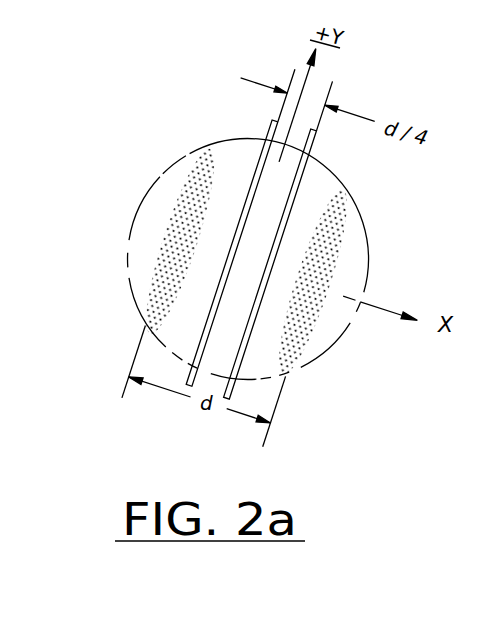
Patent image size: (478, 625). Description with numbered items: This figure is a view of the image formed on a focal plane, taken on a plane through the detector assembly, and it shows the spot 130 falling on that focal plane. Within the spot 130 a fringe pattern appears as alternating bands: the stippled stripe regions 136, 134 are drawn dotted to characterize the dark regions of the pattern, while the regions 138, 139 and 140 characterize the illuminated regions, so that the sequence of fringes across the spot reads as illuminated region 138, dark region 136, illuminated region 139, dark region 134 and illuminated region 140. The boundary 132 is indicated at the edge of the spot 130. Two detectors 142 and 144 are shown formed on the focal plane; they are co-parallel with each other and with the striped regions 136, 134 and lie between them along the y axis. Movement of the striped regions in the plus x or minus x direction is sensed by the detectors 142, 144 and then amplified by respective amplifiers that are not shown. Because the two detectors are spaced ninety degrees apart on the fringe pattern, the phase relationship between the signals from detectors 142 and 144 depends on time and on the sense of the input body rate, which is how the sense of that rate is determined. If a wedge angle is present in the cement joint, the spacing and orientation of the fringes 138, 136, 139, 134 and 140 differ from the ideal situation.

The spot 130 is at (262, 170).
The beam boundary lower left portion 132 is at (147, 322).
The stippled stripe region 134 is at (337, 230).
The stippled stripe region 136 is at (170, 240).
The illuminated region 138 is at (160, 190).
The illuminated region 139 is at (142, 360).
The illuminated region 140 is at (338, 323).
The detector 142 is at (273, 120).
The detector 144 is at (318, 131).